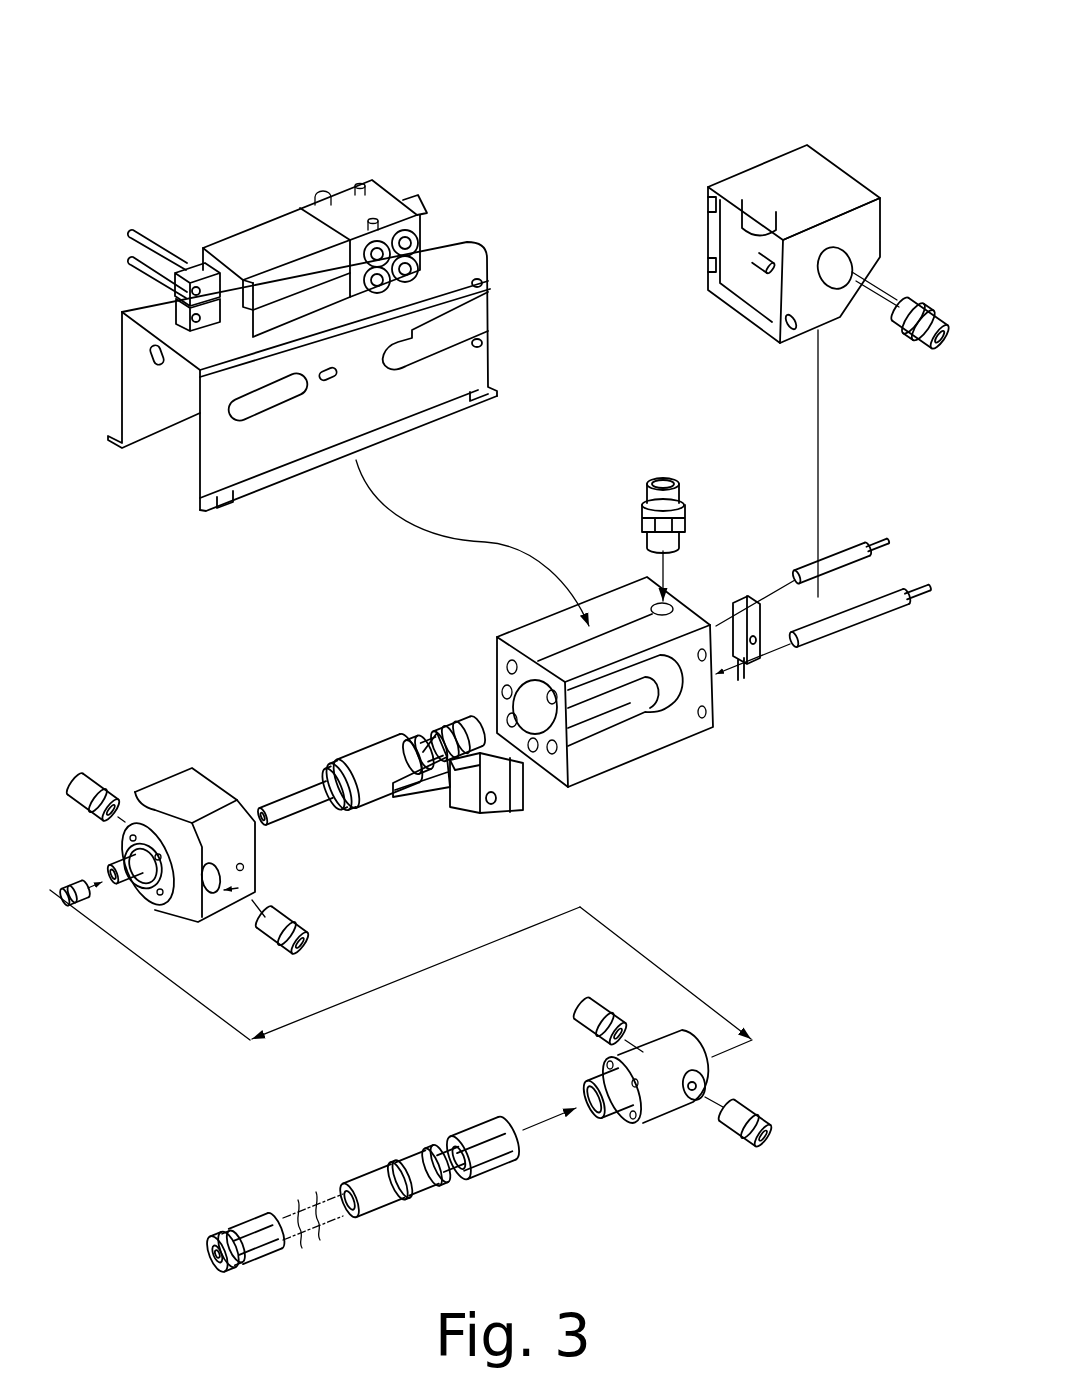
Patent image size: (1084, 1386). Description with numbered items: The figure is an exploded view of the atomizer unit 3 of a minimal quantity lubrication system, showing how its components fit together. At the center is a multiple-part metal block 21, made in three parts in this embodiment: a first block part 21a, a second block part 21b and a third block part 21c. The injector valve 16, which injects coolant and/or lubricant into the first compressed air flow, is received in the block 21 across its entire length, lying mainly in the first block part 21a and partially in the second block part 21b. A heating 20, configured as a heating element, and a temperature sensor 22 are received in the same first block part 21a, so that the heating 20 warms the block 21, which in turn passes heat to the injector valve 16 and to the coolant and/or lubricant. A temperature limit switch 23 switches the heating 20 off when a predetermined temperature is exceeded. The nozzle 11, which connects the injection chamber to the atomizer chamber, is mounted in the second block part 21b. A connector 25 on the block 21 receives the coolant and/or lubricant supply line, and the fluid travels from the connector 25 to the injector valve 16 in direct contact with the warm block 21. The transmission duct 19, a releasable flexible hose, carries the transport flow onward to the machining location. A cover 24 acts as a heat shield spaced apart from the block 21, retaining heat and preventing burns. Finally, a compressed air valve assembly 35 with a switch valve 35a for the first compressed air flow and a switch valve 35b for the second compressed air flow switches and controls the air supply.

The atomizer unit 3 is at (772, 57).
The nozzle 11 is at (80, 905).
The injector valve 16 is at (366, 733).
The transmission duct 19 is at (284, 1210).
The heating 20 is at (855, 548).
The block 21 is at (429, 902).
The first block part 21a is at (675, 725).
The second block part 21b is at (168, 780).
The third block part 21c is at (658, 1088).
The temperature sensor 22 is at (893, 603).
The temperature limit switch 23 is at (752, 668).
The cover 24 is at (467, 372).
The connector 25 is at (668, 478).
The compressed air valve assembly 35 is at (320, 210).
The switch valve 35a is at (243, 248).
The switch valve 35b is at (297, 297).